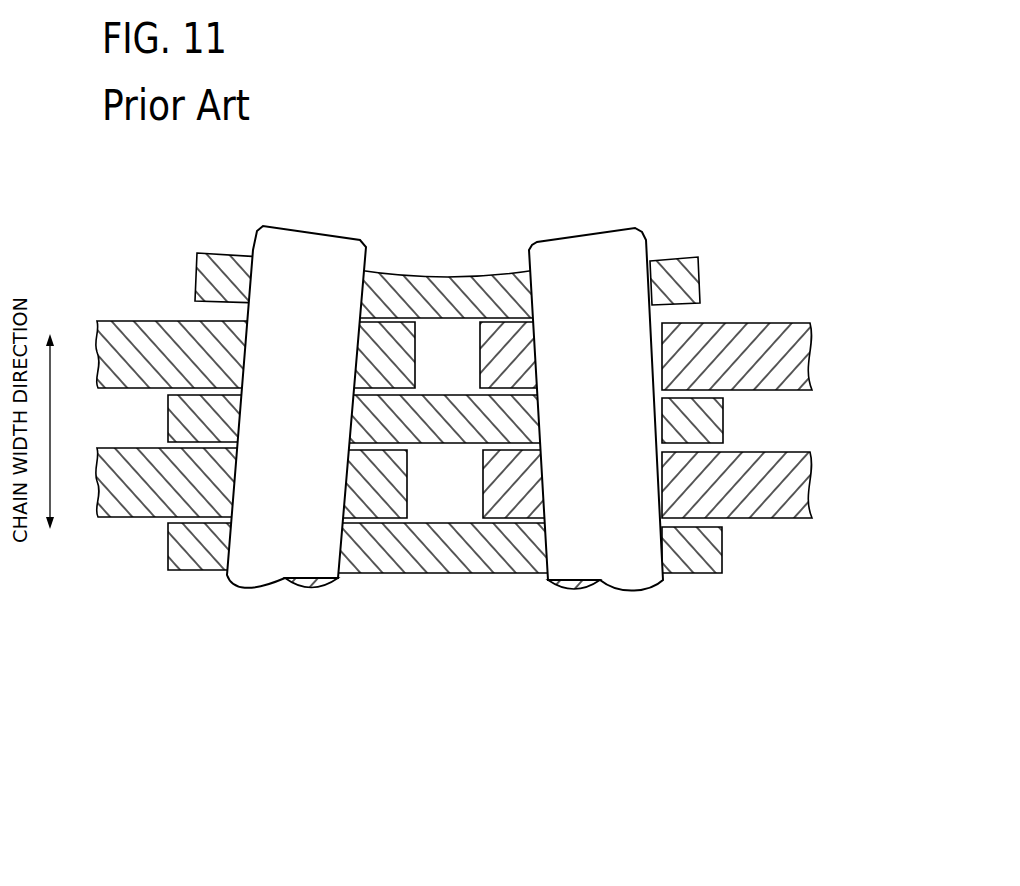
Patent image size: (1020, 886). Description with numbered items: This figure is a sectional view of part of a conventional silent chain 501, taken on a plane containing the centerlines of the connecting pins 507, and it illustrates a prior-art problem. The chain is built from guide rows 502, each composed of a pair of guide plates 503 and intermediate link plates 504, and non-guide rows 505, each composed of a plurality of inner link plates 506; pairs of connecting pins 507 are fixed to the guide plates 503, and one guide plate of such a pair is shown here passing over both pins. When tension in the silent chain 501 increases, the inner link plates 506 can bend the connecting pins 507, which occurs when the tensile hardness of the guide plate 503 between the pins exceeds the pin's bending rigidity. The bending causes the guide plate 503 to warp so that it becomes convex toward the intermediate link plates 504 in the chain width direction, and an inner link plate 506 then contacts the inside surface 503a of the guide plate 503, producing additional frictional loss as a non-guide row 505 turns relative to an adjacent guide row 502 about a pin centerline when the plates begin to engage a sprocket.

The silent chain 501 is at (532, 680).
The guide row 502 is at (547, 172).
The guide plate 503 is at (682, 270).
The inside surface of the guide plate 503a is at (437, 324).
The intermediate link plate 504 is at (693, 437).
The non-guide row 505 is at (148, 236).
The inner link plate 506 is at (118, 372).
The connecting pin 507 is at (280, 550).